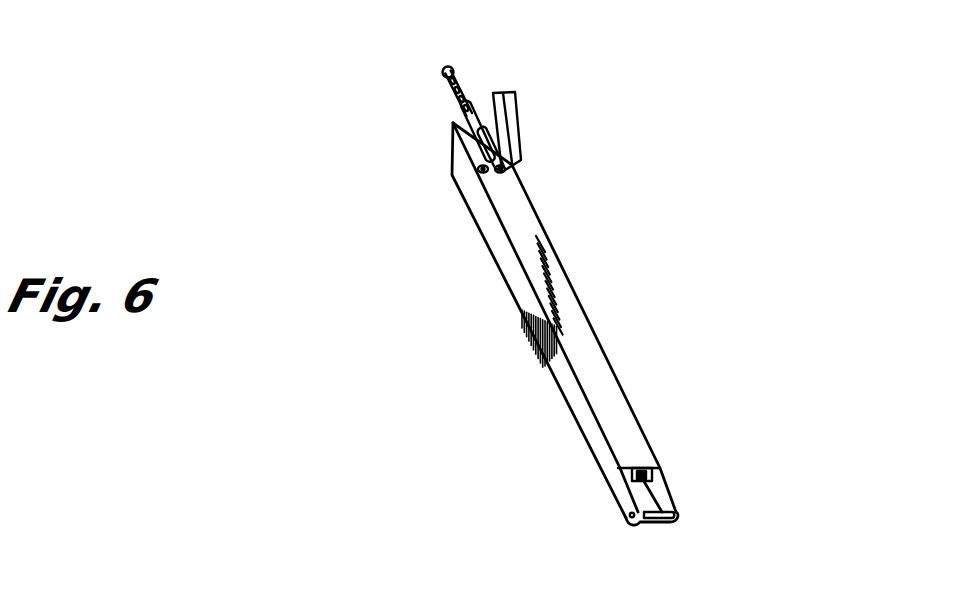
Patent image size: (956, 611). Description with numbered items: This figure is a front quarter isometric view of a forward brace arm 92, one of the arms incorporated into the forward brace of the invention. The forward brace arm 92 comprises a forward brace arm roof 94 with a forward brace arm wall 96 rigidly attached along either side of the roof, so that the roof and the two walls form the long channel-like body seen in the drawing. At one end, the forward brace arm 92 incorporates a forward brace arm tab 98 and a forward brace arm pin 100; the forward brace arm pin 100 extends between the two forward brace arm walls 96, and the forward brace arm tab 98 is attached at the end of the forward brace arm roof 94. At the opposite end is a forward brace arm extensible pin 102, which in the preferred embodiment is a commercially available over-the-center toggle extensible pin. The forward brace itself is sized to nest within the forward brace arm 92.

The forward brace arm 92 is at (768, 198).
The forward brace arm roof 94 is at (590, 357).
The forward brace arm wall 96 is at (567, 391).
The forward brace arm tab 98 is at (645, 470).
The forward brace arm pin 100 is at (654, 519).
The forward brace arm extensible pin 102 is at (477, 91).